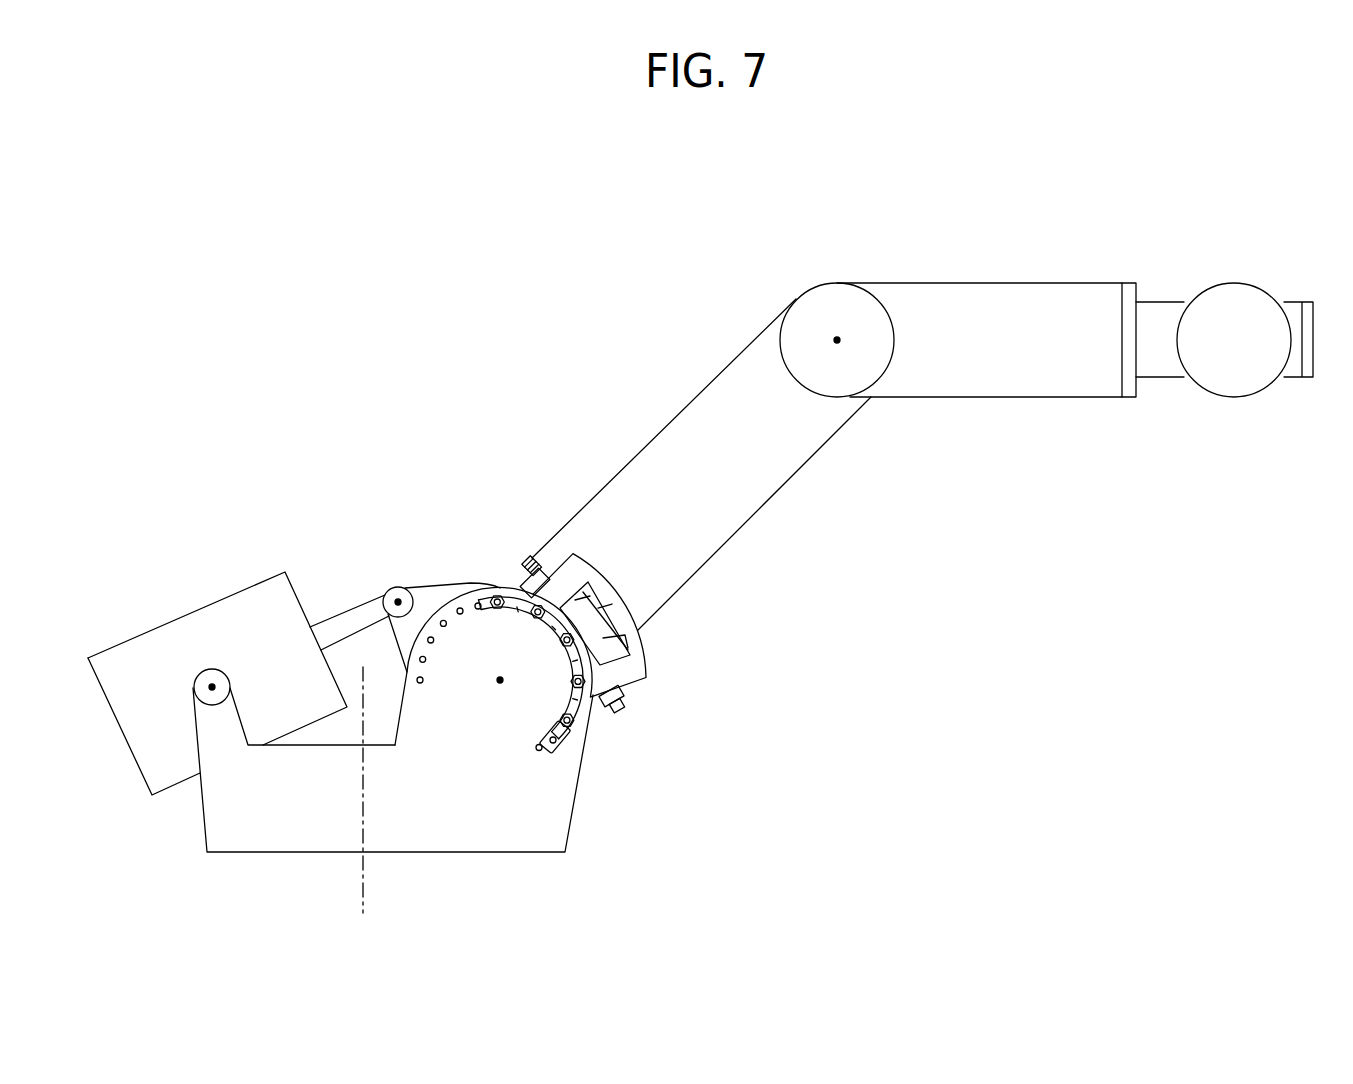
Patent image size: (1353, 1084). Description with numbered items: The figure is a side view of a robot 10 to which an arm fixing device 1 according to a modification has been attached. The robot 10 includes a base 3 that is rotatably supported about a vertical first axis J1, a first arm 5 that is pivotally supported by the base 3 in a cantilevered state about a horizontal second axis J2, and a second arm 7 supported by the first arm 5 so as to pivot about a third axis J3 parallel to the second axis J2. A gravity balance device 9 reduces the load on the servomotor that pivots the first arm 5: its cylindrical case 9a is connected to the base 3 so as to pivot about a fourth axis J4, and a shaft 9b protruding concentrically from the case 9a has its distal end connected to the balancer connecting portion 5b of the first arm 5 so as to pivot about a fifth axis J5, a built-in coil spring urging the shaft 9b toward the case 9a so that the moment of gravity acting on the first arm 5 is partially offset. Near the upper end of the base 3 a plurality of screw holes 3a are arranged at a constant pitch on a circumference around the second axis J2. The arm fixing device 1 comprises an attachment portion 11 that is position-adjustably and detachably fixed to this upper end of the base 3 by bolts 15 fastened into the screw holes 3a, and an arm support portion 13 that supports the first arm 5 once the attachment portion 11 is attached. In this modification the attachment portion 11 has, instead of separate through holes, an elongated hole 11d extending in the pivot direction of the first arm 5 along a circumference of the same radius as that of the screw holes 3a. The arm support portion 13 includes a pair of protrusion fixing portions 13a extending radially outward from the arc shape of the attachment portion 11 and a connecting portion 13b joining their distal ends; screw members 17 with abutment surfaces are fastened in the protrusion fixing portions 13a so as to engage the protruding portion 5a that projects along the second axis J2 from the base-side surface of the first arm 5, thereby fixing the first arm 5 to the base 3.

The arm fixing device 1 is at (683, 675).
The base 3 is at (268, 853).
The screw holes 3a is at (437, 605).
The first arm 5 is at (690, 395).
The protruding portion 5a is at (623, 628).
The balancer connecting portion 5b is at (472, 580).
The second arm 7 is at (995, 283).
The gravity balance device 9 is at (373, 487).
The case 9a is at (253, 584).
The shaft 9b is at (349, 609).
The robot 10 is at (363, 211).
The attachment portion 11 is at (570, 740).
The elongated hole 11d is at (510, 615).
The arm support portion 13 is at (798, 543).
The protrusion fixing portions 13a is at (596, 565).
The connecting portion 13b is at (620, 610).
The bolts 15 is at (497, 596).
The screw members 17 is at (532, 558).
The first axis J1 is at (363, 888).
The second axis J2 is at (500, 682).
The third axis J3 is at (837, 340).
The fourth axis J4 is at (211, 686).
The fifth axis J5 is at (398, 600).